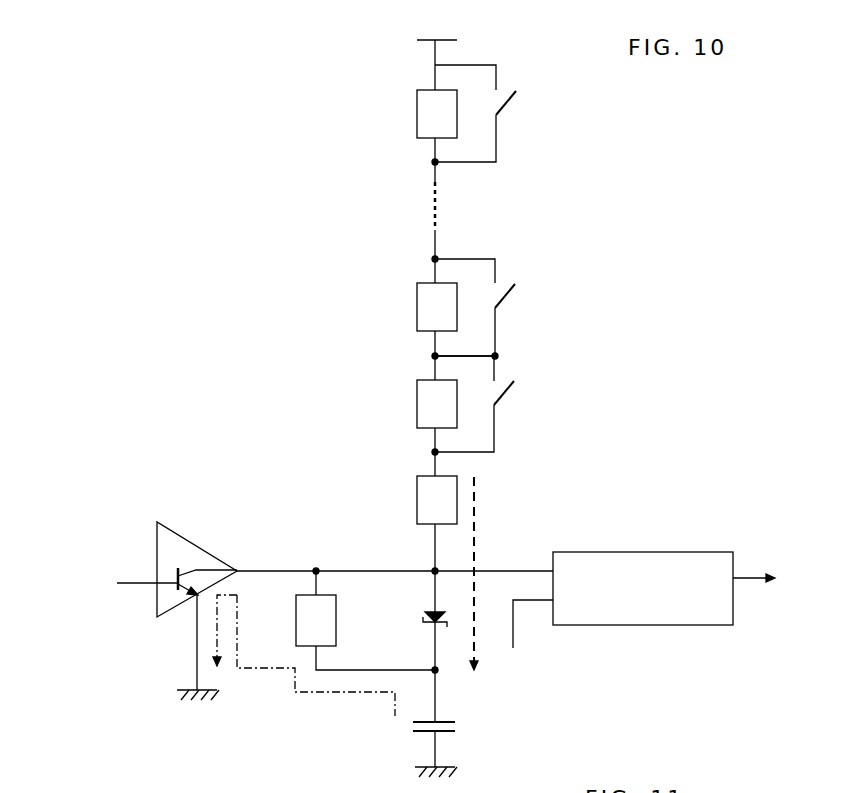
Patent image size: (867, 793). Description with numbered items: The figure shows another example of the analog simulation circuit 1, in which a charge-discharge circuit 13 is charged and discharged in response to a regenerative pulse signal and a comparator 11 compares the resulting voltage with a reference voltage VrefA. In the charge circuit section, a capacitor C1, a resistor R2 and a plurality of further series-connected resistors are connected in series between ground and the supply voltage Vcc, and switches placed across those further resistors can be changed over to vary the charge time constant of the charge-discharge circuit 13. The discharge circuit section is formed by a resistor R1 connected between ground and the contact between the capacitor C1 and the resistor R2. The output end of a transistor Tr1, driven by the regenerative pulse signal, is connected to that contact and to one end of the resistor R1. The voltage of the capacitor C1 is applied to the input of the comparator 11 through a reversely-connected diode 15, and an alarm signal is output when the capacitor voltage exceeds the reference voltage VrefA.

The analog simulation circuit 1 is at (198, 241).
The charge-discharge circuit 13 is at (297, 341).
The comparator 11 is at (712, 552).
The diode 15 is at (431, 611).
The transistor Tr1 is at (157, 604).
The resistor R1 is at (341, 620).
The resistor R2 is at (417, 500).
The capacitor C1 is at (455, 725).